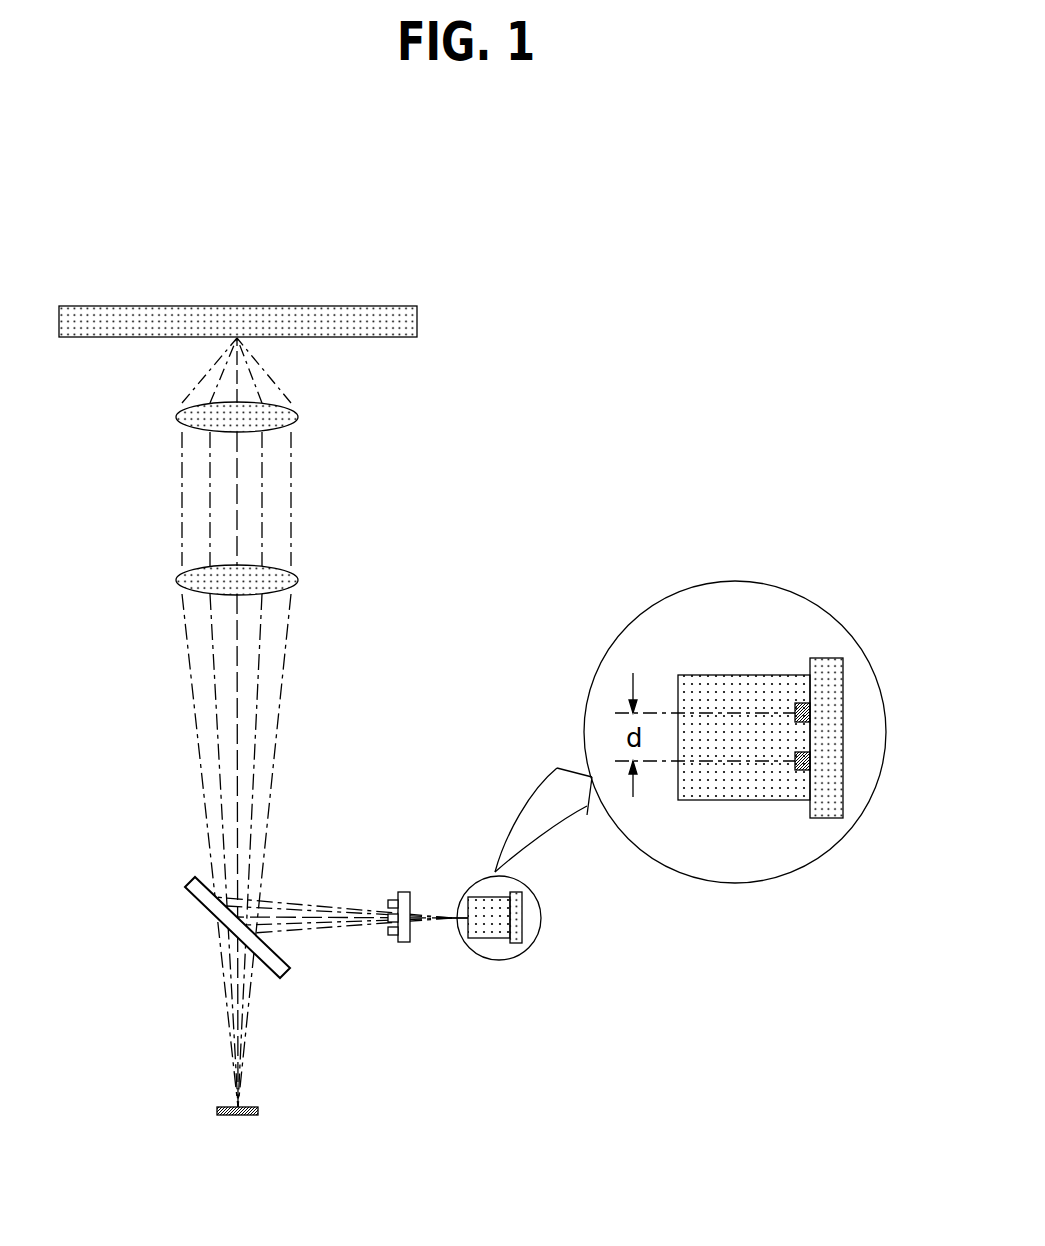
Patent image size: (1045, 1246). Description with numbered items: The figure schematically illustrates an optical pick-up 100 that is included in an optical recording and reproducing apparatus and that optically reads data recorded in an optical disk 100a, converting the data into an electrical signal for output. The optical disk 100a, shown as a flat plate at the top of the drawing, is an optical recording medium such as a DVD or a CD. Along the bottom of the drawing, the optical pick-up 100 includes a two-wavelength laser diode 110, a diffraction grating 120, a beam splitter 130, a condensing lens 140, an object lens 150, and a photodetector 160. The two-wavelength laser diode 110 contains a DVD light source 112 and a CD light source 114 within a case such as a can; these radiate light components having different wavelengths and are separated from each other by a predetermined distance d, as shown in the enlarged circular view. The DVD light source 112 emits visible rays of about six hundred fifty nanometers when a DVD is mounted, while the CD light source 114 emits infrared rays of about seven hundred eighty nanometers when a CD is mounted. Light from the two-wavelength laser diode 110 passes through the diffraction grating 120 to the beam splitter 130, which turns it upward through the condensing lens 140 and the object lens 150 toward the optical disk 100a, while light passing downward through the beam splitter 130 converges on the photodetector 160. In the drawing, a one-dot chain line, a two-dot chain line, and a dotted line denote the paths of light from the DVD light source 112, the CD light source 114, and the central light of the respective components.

The optical pick-up 100 is at (84, 240).
The optical disk 100a is at (417, 322).
The two-wavelength laser diode 110 is at (498, 938).
The DVD light source 112 is at (805, 703).
The CD light source 114 is at (805, 752).
The diffraction grating 120 is at (404, 942).
The beam splitter 130 is at (287, 970).
The condensing lens 140 is at (298, 580).
The object lens 150 is at (298, 417).
The photodetector 160 is at (258, 1111).